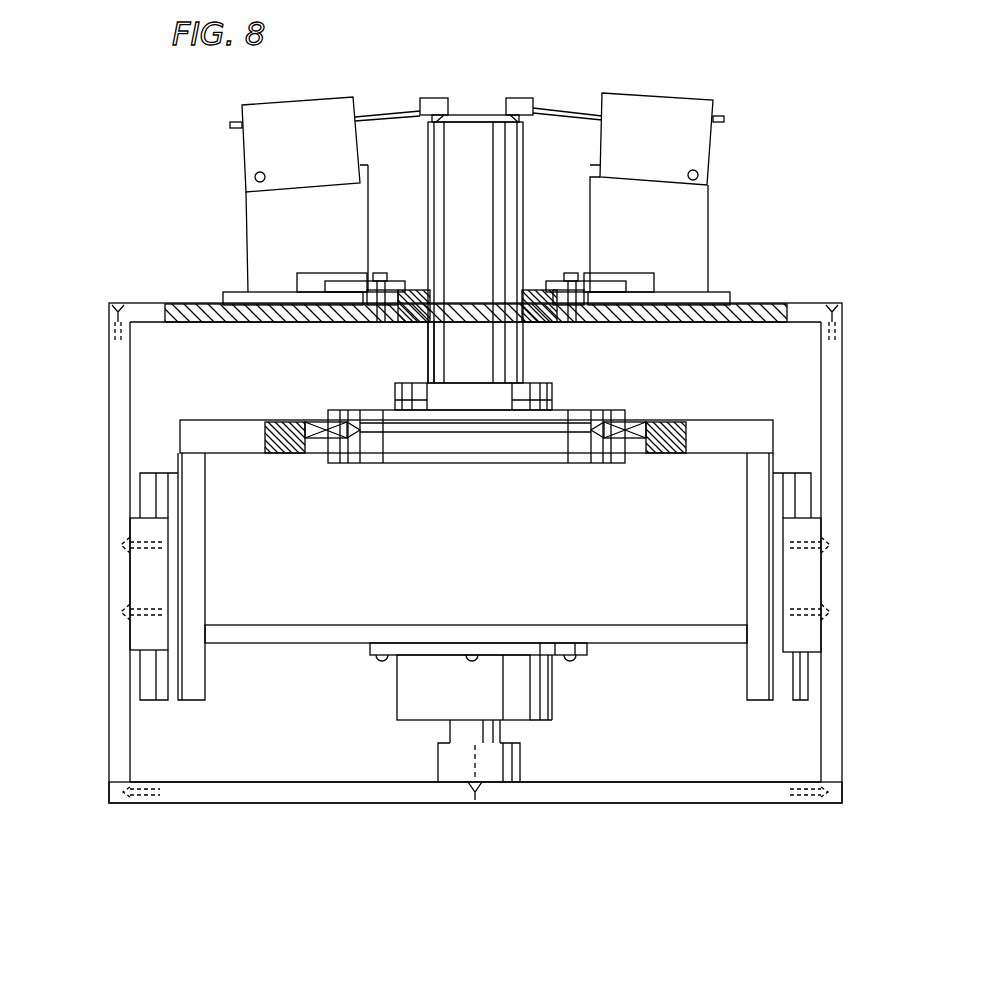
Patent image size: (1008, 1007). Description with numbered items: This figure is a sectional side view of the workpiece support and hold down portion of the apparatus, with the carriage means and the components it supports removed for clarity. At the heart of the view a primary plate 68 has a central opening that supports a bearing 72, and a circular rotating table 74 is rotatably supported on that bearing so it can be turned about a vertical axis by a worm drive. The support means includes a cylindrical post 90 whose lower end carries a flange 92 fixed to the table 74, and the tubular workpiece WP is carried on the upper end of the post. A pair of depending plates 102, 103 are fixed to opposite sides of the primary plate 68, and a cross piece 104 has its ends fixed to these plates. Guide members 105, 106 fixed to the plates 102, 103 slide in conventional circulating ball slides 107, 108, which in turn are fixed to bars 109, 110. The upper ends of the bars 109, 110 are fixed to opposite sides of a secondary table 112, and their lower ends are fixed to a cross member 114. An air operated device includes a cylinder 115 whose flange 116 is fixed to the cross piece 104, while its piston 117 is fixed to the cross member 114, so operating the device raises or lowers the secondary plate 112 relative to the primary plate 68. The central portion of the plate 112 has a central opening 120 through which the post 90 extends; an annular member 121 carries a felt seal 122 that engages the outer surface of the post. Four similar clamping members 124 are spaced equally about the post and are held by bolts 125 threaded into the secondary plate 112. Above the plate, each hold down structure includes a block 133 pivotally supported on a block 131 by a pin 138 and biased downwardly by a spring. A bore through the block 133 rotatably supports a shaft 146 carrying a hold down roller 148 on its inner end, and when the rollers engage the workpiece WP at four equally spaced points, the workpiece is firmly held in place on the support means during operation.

The primary plate 68 is at (240, 455).
The bearing 72 is at (325, 420).
The circular rotating table 74 is at (370, 420).
The cylindrical post 90 is at (518, 364).
The flange 92 is at (557, 395).
The depending plate 102 is at (190, 558).
The depending plate 103 is at (746, 545).
The cross piece 104 is at (268, 635).
The guide member 105 is at (165, 470).
The guide member 106 is at (782, 498).
The circulating ball slide 107 is at (138, 586).
The circulating ball slide 108 is at (800, 605).
The bar 109 is at (112, 508).
The bar 110 is at (830, 385).
The secondary table 112 is at (760, 305).
The cross member 114 is at (300, 800).
The cylinder 115 is at (530, 698).
The flange 116 is at (525, 645).
The piston 117 is at (500, 740).
The central opening 120 is at (430, 312).
The annular member 121 is at (410, 285).
The felt seal 122 is at (530, 290).
The clamping member 124 is at (352, 283).
The bolt 125 is at (382, 272).
The block 131 is at (250, 252).
The block 133 is at (477, 142).
The pin 138 is at (255, 178).
The shaft 146 is at (375, 112).
The hold down roller 148 is at (432, 98).
The tubular workpiece WP is at (472, 118).